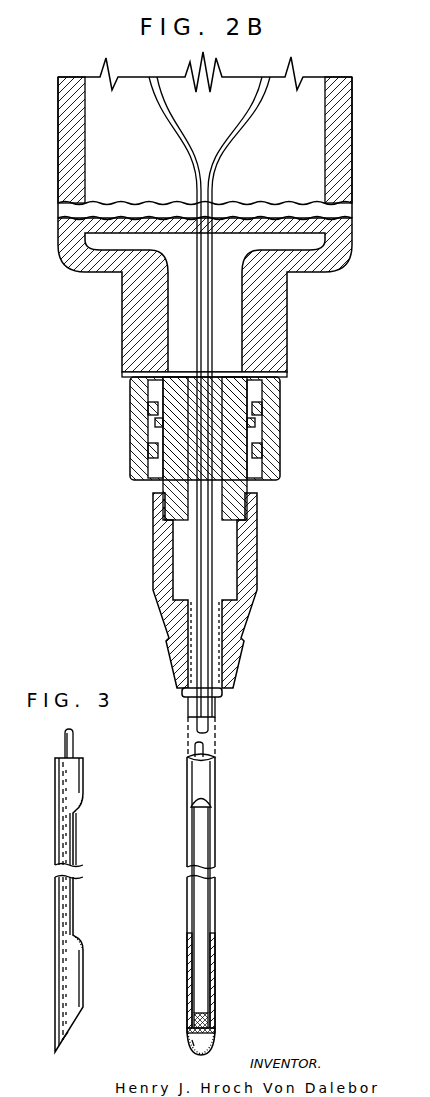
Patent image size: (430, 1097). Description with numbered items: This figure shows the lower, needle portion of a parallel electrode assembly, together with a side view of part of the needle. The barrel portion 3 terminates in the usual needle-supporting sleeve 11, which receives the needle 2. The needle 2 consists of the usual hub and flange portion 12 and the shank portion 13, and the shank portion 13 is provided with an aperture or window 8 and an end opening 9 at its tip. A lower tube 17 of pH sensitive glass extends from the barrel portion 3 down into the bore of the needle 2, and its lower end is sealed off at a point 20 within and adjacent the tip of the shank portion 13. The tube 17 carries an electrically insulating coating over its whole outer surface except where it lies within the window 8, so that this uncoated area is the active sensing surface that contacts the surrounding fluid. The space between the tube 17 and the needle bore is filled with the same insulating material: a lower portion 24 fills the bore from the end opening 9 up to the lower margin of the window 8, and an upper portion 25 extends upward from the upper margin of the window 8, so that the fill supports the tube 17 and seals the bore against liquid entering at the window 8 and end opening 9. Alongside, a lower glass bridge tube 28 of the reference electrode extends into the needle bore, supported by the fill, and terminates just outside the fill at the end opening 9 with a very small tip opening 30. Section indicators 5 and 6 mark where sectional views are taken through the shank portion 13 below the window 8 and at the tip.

In FIG. 2B, the needle 2 is at (285, 825).
In FIG. 2B, the barrel portion 3 is at (62, 183).
In FIG. 2B, the section line 5- 5 is at (172, 902).
In FIG. 2B, the section line 6- 6 is at (188, 952).
In FIG. 2B, the aperture or window 8 is at (217, 820).
In FIG. 3, the aperture or window 8 is at (75, 816).
In FIG. 2B, the end opening 9 is at (214, 1032).
In FIG. 3, the end opening 9 is at (80, 1008).
In FIG. 2B, the needle-supporting sleeve 11 is at (137, 418).
In FIG. 2B, the hub and flange portion 12 is at (243, 530).
In FIG. 2B, the shank portion 13 is at (202, 777).
In FIG. 3, the shank portion 13 is at (63, 972).
In FIG. 2B, the lower tube of pH sensitive glass 17 is at (247, 105).
In FIG. 3, the lower tube of pH sensitive glass 17 is at (73, 735).
In FIG. 2B, the sealed-off point 20 is at (207, 1023).
In FIG. 2B, the lower insulating fill portion 24 is at (208, 1046).
In FIG. 3, the lower insulating fill portion 24 is at (78, 940).
In FIG. 2B, the upper insulating fill portion 25 is at (207, 800).
In FIG. 3, the upper insulating fill portion 25 is at (80, 800).
In FIG. 2B, the lower glass bridge tube 28 is at (165, 121).
In FIG. 3, the lower glass bridge tube 28 is at (65, 749).
In FIG. 2B, the tip opening 30 is at (192, 1040).
In FIG. 3, the tip opening 30 is at (65, 1042).